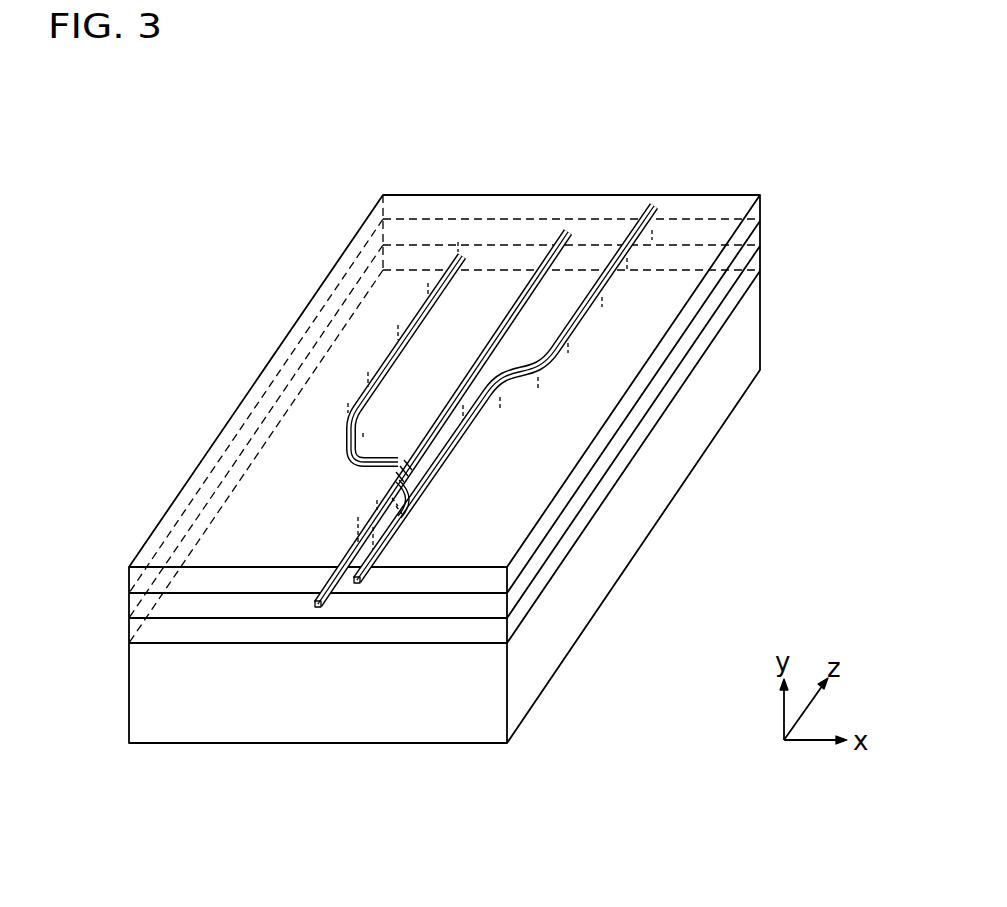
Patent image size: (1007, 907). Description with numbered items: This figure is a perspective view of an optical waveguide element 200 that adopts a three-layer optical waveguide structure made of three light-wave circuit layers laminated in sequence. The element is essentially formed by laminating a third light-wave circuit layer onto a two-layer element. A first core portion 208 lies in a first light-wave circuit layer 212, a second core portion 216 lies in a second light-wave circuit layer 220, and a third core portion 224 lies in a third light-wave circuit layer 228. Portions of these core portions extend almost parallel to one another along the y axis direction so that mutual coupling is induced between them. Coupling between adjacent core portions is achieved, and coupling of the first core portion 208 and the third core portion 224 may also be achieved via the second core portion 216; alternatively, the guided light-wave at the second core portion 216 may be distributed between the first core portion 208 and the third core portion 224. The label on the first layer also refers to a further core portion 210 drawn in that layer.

The optical waveguide element 200 is at (470, 862).
The first core portion 208 is at (387, 360).
The second waveguide 210 is at (647, 539).
The first light-wave circuit layer 212 is at (596, 497).
The second core portion 216 is at (507, 310).
The second light-wave circuit layer 220 is at (616, 441).
The third core portion 224 is at (610, 284).
The third light-wave circuit layer 228 is at (633, 390).